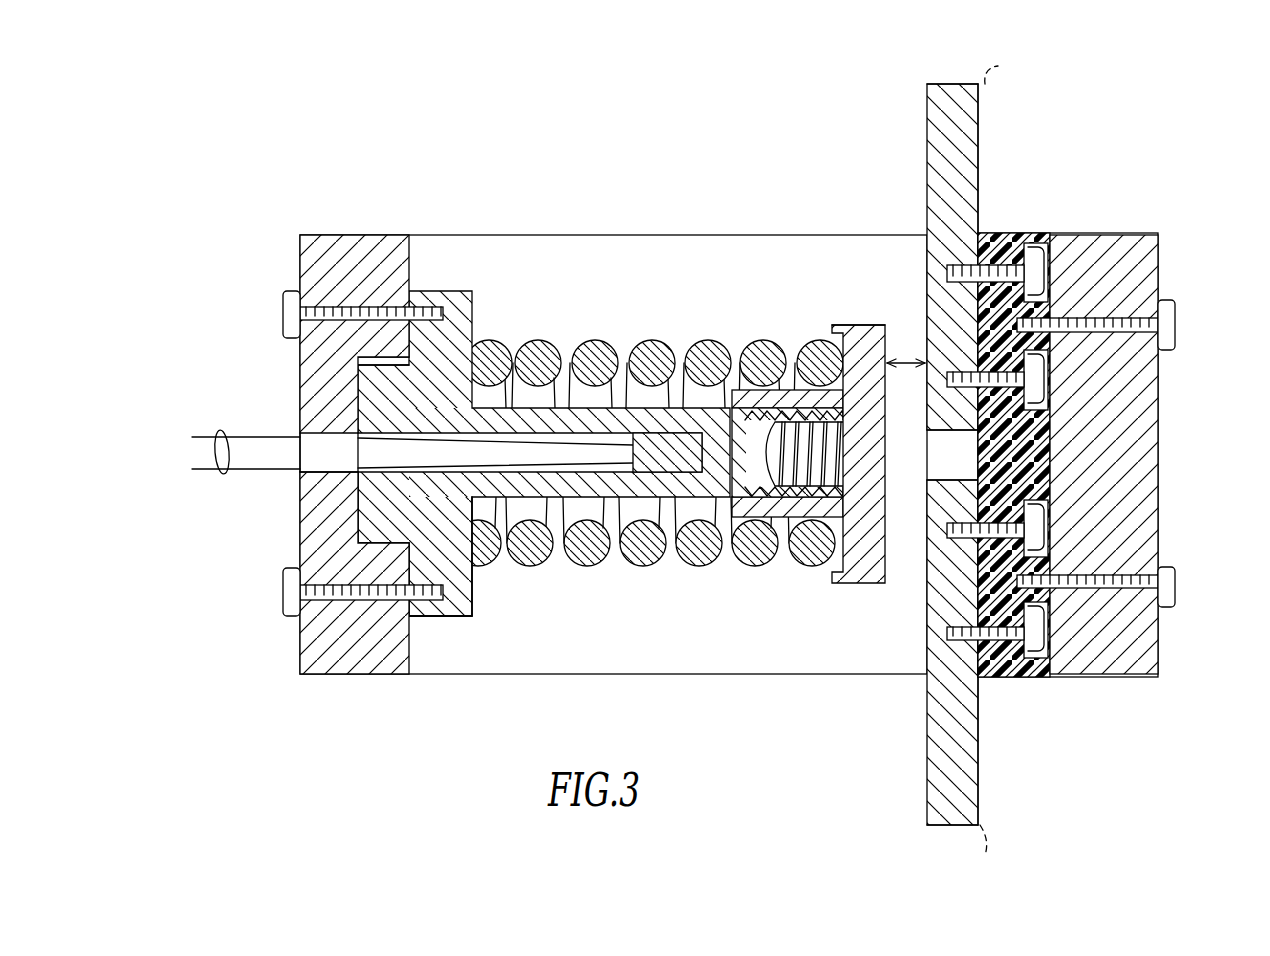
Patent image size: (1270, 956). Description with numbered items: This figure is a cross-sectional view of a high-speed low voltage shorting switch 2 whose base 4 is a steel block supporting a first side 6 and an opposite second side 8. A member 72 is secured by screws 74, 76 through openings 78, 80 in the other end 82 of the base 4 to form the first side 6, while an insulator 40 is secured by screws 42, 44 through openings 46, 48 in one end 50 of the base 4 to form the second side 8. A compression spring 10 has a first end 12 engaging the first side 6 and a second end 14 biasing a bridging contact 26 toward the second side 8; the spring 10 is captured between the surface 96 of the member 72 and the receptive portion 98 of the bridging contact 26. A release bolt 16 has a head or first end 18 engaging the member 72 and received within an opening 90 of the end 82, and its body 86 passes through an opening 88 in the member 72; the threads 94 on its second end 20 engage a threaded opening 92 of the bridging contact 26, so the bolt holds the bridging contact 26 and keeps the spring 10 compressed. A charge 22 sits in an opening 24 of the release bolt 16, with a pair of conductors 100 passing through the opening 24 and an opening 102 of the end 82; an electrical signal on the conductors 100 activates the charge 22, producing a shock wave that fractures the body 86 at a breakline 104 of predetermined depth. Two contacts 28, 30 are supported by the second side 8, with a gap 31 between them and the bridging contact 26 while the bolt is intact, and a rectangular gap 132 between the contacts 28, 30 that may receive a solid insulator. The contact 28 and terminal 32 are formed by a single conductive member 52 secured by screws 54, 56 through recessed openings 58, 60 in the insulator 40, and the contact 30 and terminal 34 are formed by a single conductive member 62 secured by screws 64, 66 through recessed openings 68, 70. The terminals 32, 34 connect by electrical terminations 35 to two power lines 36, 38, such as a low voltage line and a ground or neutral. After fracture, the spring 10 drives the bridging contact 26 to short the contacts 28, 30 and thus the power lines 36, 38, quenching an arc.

The shorting switch 2 is at (761, 717).
The base 4 is at (490, 248).
The first side 6 is at (396, 684).
The second side 8 is at (1048, 702).
The compression spring 10 is at (595, 568).
The first end 12 is at (482, 346).
The second end 14 is at (845, 325).
The release bolt 16 is at (530, 404).
The first end 18 is at (385, 512).
The second end 20 is at (846, 435).
The charge 22 is at (700, 449).
The opening 24 is at (580, 433).
The bridging contact 26 is at (871, 320).
The contact 28 is at (862, 497).
The contact 30 is at (927, 426).
The gap 31 is at (906, 354).
The terminal 32 is at (922, 742).
The terminal 34 is at (922, 170).
The electrical terminations 35 is at (978, 96).
The power line 36 is at (988, 854).
The power line 38 is at (998, 66).
The insulator 40 is at (1031, 240).
The screw 42 is at (1175, 588).
The screw 44 is at (1175, 320).
The opening 46 is at (1100, 575).
The opening 48 is at (1090, 318).
The end 50 is at (1158, 447).
The conductive member 52 is at (950, 828).
The screw 54 is at (1040, 537).
The screw 56 is at (1005, 678).
The recessed opening 58 is at (1050, 505).
The recessed opening 60 is at (1050, 660).
The conductive member 62 is at (950, 82).
The screw 64 is at (1000, 242).
The screw 66 is at (1040, 372).
The recessed opening 68 is at (1050, 250).
The recessed opening 70 is at (1045, 398).
The member 72 is at (440, 618).
The screw 74 is at (285, 320).
The screw 76 is at (285, 597).
The opening 78 is at (385, 307).
The opening 80 is at (380, 600).
The end 82 is at (300, 490).
The body 86 is at (642, 345).
The opening 88 is at (512, 560).
The opening 90 is at (380, 360).
The threaded opening 92 is at (725, 346).
The threads 94 is at (832, 468).
The surface 96 is at (472, 608).
The receptive portion 98 is at (828, 346).
The conductors 100 is at (226, 430).
The opening 102 is at (306, 440).
The breakline 104 is at (688, 345).
The rectangular gap 132 is at (958, 462).